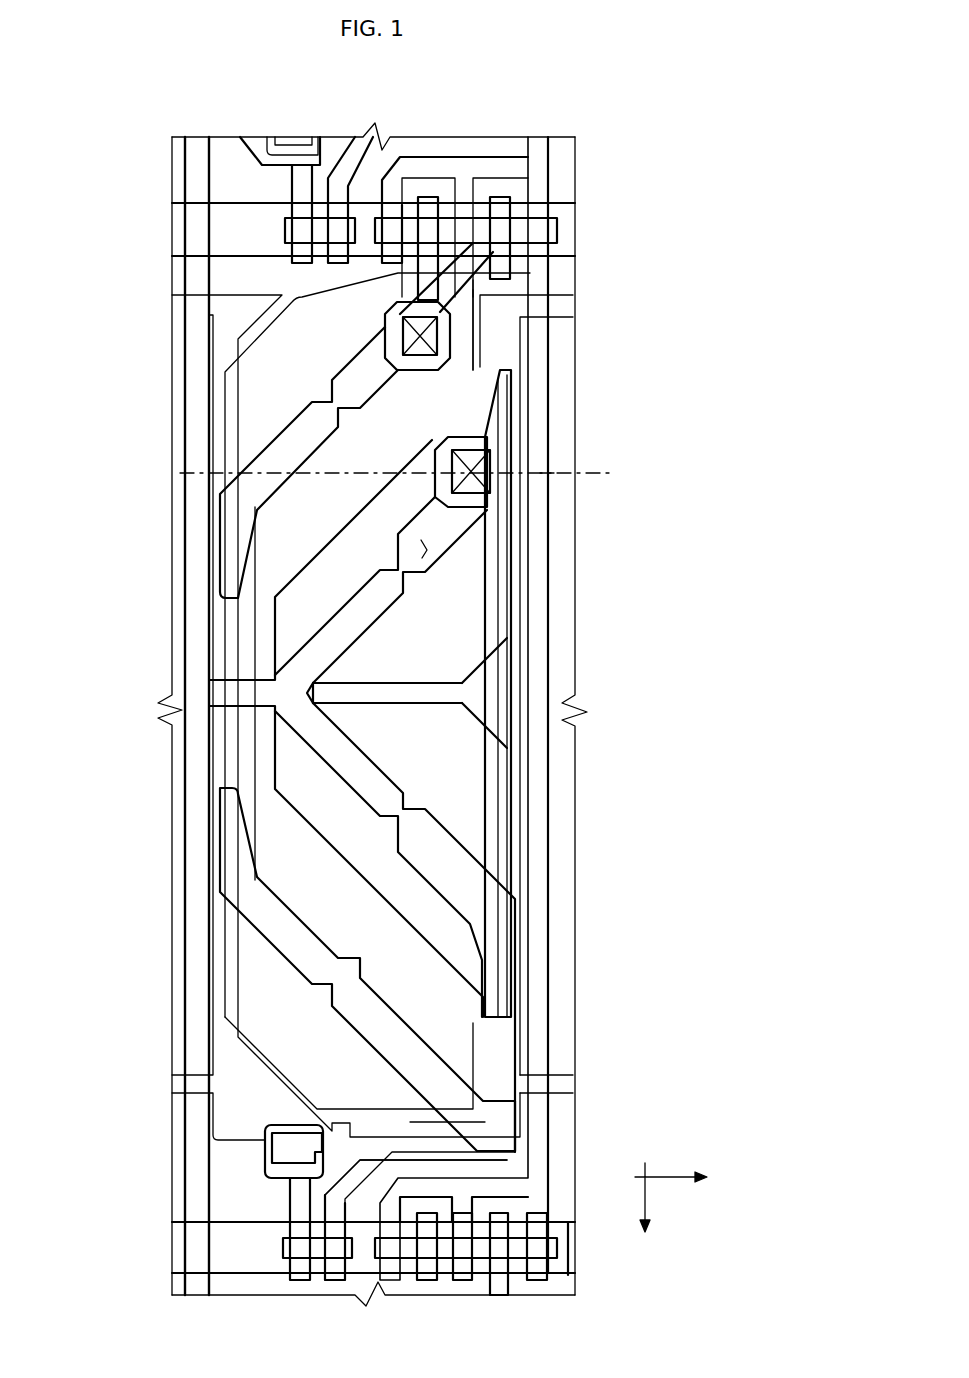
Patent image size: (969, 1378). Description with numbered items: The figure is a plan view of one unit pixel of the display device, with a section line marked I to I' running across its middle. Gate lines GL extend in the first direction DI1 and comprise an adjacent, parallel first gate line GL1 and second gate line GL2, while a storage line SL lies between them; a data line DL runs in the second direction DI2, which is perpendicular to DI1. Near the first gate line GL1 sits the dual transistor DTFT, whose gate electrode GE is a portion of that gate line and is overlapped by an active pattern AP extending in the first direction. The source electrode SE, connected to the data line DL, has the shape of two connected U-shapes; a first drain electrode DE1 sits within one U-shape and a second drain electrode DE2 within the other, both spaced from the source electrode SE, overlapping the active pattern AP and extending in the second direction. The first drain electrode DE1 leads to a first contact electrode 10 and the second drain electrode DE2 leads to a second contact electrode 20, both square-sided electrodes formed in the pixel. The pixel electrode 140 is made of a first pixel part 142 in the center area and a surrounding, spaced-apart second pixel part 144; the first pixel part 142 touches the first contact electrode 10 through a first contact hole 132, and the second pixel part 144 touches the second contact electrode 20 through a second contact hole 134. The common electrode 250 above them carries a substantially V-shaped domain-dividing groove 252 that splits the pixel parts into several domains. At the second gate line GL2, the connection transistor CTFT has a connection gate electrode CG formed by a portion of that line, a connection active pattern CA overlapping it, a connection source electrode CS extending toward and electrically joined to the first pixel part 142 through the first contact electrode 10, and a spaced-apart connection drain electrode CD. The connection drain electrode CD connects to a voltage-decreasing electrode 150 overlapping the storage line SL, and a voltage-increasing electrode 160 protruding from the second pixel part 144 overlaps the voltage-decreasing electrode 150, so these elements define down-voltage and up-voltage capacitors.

The gate lines GL is at (138, 204).
The first gate line GL1 is at (218, 232).
The second gate line GL2 is at (222, 1228).
The source electrode SE is at (463, 163).
The gate electrode GE is at (413, 208).
The first drain electrode DE1 is at (447, 233).
The second drain electrode DE2 is at (428, 212).
The active pattern AP is at (477, 240).
The dual transistor DTFT is at (655, 132).
The connection transistor CTFT is at (103, 1213).
The connection gate electrode CG is at (317, 1252).
The connection active pattern CA is at (333, 1265).
The connection source electrode CS is at (297, 1270).
The connection drain electrode CD is at (227, 1277).
The second contact hole 134 is at (443, 342).
The first contact hole 132 is at (490, 488).
The second contact electrode 20 is at (447, 352).
The first contact electrode 10 is at (470, 408).
The pixel electrode 140 is at (103, 520).
The first pixel part 142 is at (282, 613).
The second pixel part 144 is at (265, 528).
The common electrode 250 is at (478, 690).
The domain-dividing groove 252 is at (428, 550).
The data line DL is at (540, 750).
The storage line SL is at (222, 1058).
The voltage-increasing electrode 160 is at (278, 1142).
The voltage-decreasing electrode 150 is at (265, 1165).
The first direction DI1 is at (693, 1176).
The second direction DI2 is at (651, 1222).
The section line I is at (358, 473).
The section line I' is at (593, 473).